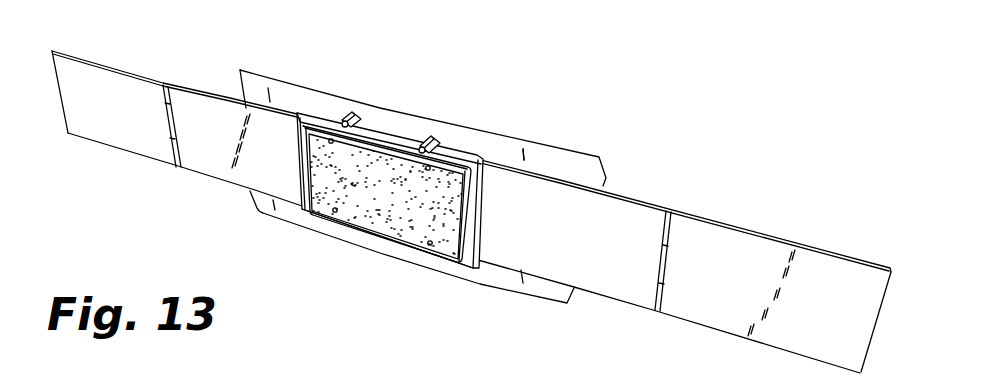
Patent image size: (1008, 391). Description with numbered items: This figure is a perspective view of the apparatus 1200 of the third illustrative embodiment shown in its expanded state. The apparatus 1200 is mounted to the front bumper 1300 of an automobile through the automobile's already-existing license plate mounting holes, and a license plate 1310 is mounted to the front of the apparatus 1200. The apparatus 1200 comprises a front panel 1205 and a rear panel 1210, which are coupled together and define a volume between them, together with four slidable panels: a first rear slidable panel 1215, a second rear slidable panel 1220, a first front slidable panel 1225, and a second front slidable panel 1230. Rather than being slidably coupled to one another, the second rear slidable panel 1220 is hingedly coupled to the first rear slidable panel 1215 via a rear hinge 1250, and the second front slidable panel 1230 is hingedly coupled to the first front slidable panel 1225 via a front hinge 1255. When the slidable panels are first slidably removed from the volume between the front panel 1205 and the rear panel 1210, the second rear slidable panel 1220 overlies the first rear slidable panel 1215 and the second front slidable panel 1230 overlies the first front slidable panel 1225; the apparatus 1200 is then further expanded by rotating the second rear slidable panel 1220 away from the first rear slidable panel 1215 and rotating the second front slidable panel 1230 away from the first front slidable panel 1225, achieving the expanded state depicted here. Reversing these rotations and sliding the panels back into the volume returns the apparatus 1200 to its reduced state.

The apparatus 1200 is at (164, 180).
The front panel 1205 is at (367, 133).
The rear panel 1210 is at (397, 137).
The first rear slidable panel 1215 is at (625, 225).
The second rear slidable panel 1220 is at (827, 273).
The first front slidable panel 1225 is at (210, 118).
The second front slidable panel 1230 is at (97, 98).
The rear hinge 1250 is at (672, 214).
The front hinge 1255 is at (164, 88).
The front bumper 1300 is at (543, 162).
The license plate 1310 is at (384, 207).